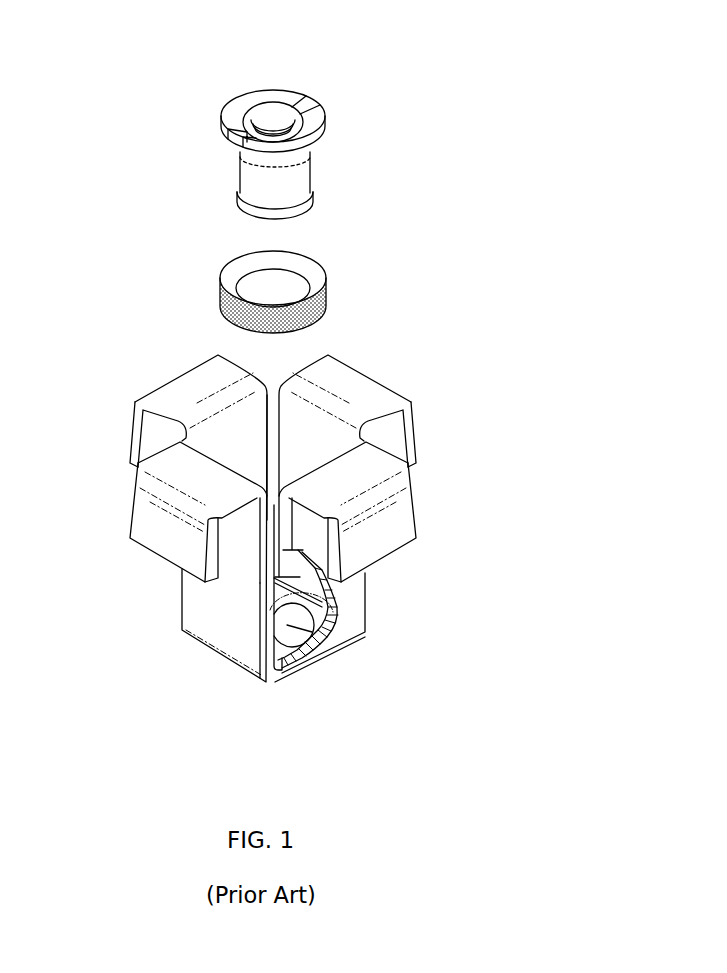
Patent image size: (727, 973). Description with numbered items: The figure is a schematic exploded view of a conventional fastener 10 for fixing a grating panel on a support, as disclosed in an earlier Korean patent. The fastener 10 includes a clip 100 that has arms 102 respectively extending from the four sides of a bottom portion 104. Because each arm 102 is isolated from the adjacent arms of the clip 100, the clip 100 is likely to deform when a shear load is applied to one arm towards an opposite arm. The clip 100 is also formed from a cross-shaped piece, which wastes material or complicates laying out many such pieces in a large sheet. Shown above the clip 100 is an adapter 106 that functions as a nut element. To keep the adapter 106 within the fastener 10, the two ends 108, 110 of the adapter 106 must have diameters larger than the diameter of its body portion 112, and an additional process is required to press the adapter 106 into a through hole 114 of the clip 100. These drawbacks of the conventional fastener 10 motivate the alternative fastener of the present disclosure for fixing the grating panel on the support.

The fastener 10 is at (119, 92).
The clip 100 is at (445, 400).
The arm 102 is at (192, 606).
The bottom portion 104 is at (333, 612).
The adapter 106 is at (374, 110).
The end 108 is at (270, 90).
The end 110 is at (290, 205).
The body portion 112 is at (297, 173).
The through hole 114 is at (320, 647).